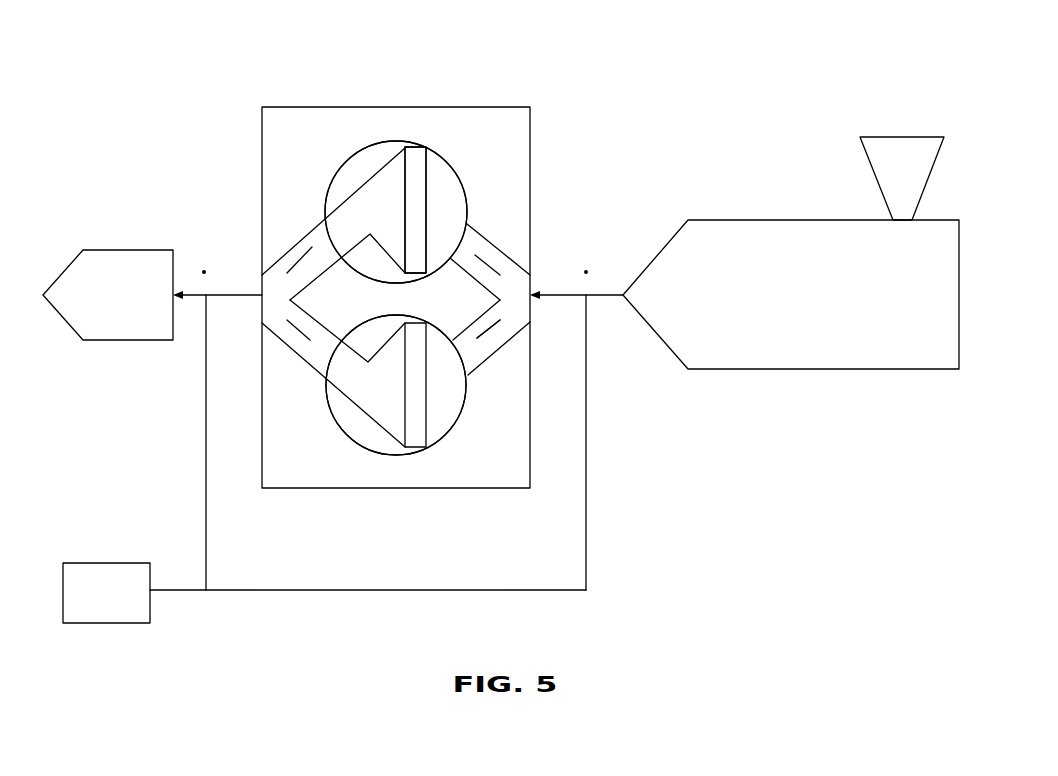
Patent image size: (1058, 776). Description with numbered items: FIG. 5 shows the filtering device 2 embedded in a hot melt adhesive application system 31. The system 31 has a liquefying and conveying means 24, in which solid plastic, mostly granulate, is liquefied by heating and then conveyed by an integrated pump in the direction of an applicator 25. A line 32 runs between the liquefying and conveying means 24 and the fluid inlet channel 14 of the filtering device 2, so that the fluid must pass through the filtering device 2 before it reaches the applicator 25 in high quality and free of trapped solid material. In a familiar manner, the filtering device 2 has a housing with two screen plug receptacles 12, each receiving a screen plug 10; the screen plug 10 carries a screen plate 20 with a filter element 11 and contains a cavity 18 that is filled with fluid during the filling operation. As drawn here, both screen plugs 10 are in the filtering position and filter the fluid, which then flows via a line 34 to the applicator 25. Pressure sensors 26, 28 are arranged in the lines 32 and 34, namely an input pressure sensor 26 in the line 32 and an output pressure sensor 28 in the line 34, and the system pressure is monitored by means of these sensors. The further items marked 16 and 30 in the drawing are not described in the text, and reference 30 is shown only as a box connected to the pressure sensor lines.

The filtering device 2 is at (552, 117).
The screen plug 10 is at (343, 160).
The filter element 11 is at (418, 158).
The screen plug receptacle 12 is at (388, 140).
The fluid inlet channel 14 is at (512, 300).
The flow passage 16 is at (312, 247).
The cavity 18 is at (365, 223).
The screen plate 20 is at (415, 210).
The liquefying and conveying means 24 is at (797, 220).
The applicator 25 is at (128, 249).
The input pressure sensor 26 is at (638, 488).
The output pressure sensor 28 is at (168, 467).
The controller 30 is at (128, 562).
The hot melt adhesive application system 31 is at (757, 498).
The line 32 is at (615, 294).
The line 34 is at (250, 294).